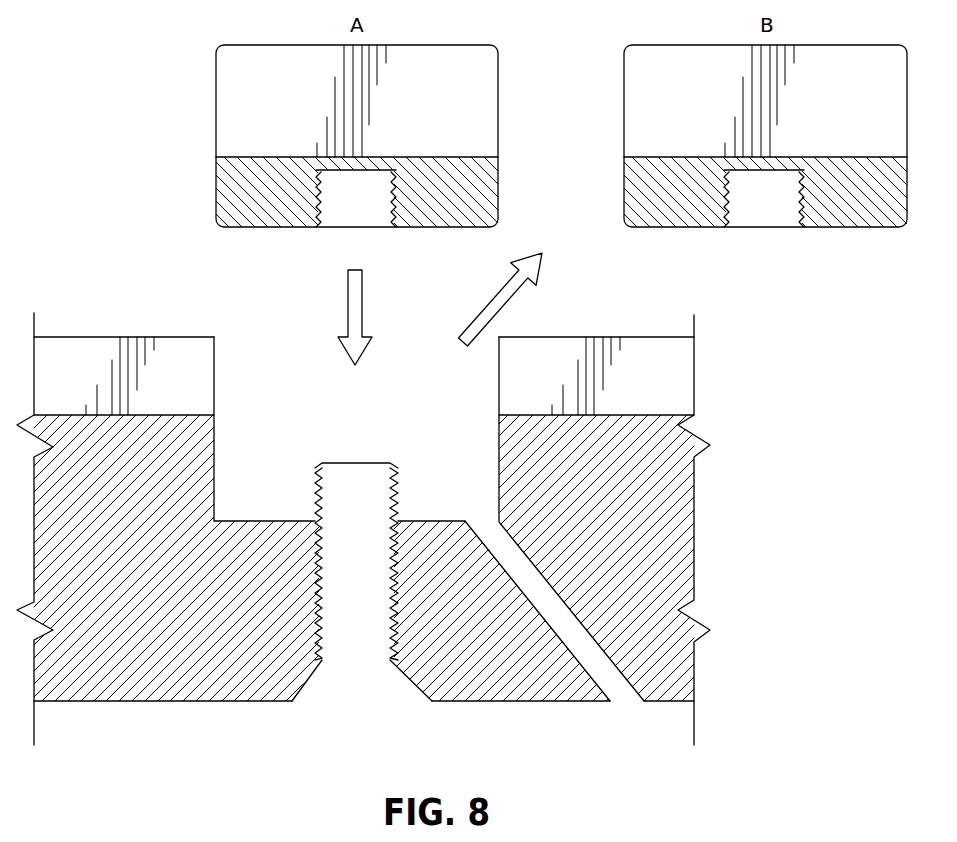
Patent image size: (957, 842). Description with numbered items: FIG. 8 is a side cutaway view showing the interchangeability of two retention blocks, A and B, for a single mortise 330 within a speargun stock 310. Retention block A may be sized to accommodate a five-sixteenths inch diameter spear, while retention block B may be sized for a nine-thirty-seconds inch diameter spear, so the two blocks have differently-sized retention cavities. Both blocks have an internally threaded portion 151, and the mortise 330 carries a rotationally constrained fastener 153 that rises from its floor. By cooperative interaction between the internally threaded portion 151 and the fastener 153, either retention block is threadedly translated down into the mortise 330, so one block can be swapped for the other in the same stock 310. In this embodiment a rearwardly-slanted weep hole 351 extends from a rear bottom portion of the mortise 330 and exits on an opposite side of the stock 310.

The internally threaded portion 151 is at (373, 215).
The rotationally constrained fastener 153 is at (395, 482).
The stock 310 is at (632, 517).
The mortise 330 is at (252, 357).
The weep hole 351 is at (620, 690).